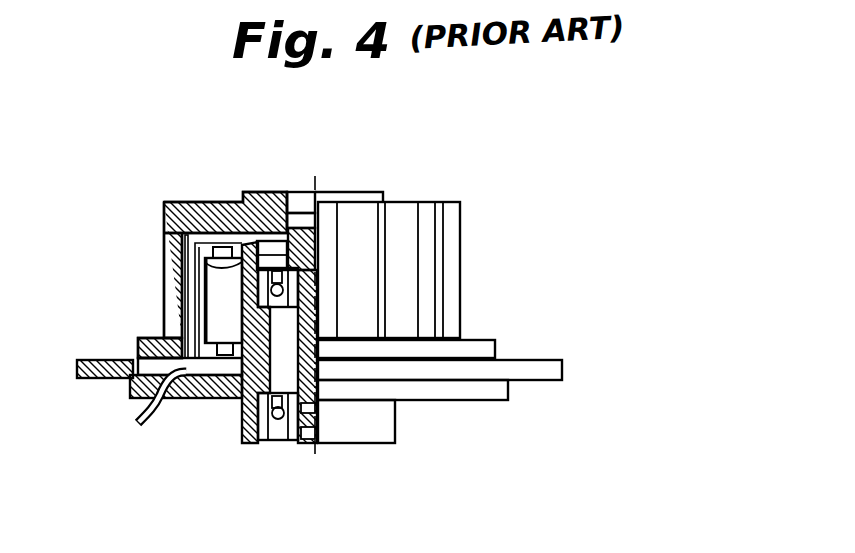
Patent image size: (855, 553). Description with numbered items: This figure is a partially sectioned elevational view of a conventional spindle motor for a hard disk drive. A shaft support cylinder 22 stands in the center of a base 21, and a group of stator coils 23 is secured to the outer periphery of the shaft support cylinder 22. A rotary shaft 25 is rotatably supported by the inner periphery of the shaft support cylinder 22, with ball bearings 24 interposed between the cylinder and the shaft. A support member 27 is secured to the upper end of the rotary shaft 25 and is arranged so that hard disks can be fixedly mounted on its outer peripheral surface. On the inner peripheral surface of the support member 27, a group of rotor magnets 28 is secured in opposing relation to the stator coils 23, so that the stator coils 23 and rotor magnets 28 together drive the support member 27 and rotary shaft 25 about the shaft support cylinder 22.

The base 21 is at (92, 360).
The shaft support cylinder 22 is at (205, 265).
The stator coils 23 is at (230, 289).
The ball bearings 24 is at (266, 424).
The rotary shaft 25 is at (327, 317).
The support member 27 is at (217, 202).
The rotor magnets 28 is at (197, 319).